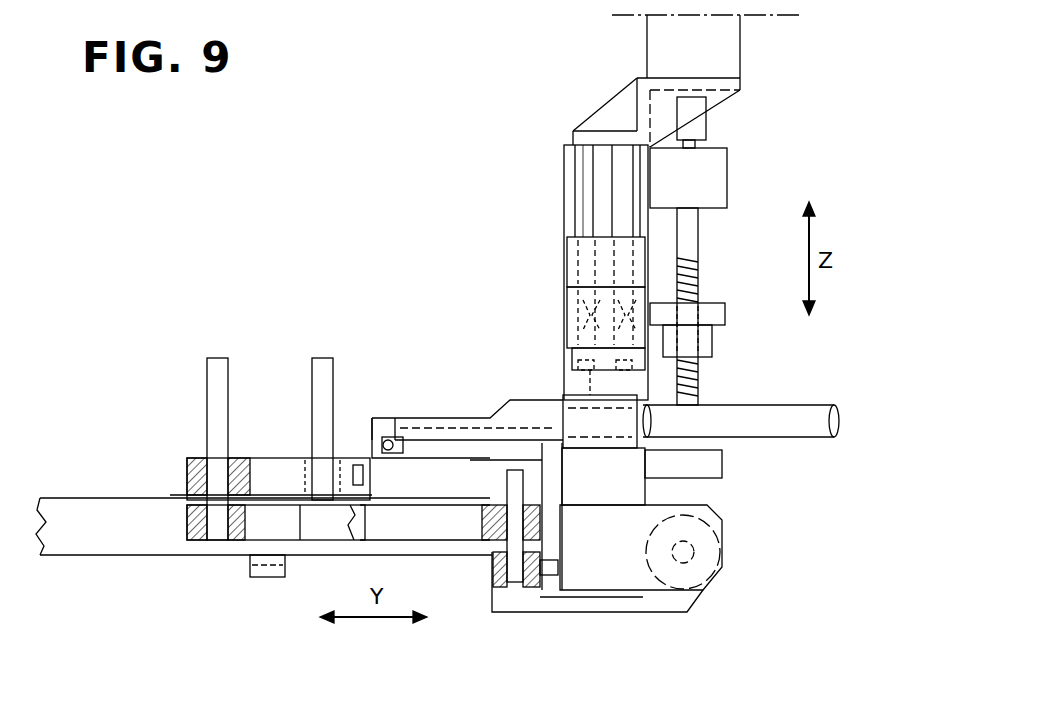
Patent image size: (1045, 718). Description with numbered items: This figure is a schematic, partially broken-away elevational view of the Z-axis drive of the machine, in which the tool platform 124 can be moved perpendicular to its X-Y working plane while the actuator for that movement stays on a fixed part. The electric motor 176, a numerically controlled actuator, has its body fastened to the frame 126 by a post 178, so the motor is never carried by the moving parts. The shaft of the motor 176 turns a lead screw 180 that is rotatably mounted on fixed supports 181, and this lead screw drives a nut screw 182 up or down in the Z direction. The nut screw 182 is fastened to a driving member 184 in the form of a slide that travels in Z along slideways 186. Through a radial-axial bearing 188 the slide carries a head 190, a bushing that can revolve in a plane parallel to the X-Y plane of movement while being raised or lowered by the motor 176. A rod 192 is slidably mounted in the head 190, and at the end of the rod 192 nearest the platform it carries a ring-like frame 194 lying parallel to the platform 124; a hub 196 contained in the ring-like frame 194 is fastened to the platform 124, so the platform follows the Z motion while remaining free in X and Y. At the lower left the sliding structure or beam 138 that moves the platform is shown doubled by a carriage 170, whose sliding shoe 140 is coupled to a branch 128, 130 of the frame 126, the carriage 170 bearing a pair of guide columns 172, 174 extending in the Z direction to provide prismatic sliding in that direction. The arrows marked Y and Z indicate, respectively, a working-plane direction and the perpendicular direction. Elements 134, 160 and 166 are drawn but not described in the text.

The platform 124 is at (442, 470).
The frame 126 is at (88, 492).
The branch of the frame 128 is at (620, 577).
The branch of the frame 130 is at (157, 545).
The base plate 134 is at (93, 525).
The sliding structure or beam 138 is at (268, 475).
The sliding shoe 140 is at (556, 590).
The roller 160 is at (707, 555).
The stop 166 is at (265, 577).
The carriage 170 is at (298, 540).
The guide column 172 is at (512, 560).
The guide column 174 is at (318, 358).
The motor 176 is at (657, 33).
The post 178 is at (568, 202).
The lead screw 180 is at (688, 245).
The fixed supports 181 is at (718, 170).
The nut screw 182 is at (722, 340).
The driving member 184 is at (565, 248).
The slideways 186 is at (630, 175).
The radial-axial bearing 188 is at (583, 310).
The head 190 is at (578, 395).
The rod 192 is at (770, 420).
The ring-like frame 194 is at (383, 425).
The hub 196 is at (415, 430).